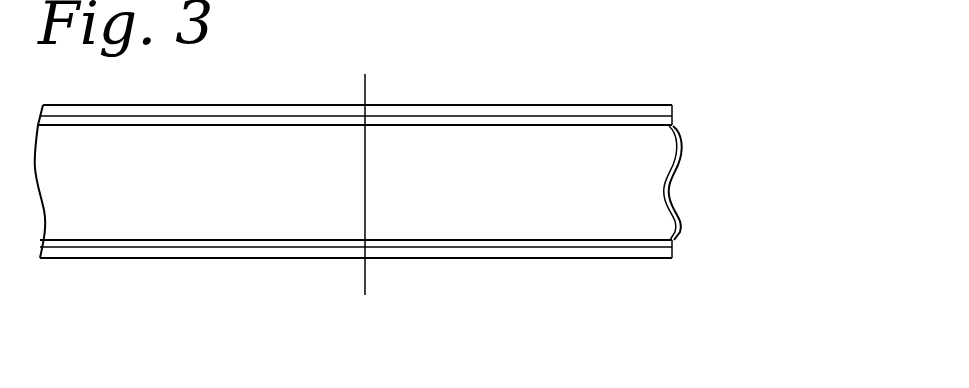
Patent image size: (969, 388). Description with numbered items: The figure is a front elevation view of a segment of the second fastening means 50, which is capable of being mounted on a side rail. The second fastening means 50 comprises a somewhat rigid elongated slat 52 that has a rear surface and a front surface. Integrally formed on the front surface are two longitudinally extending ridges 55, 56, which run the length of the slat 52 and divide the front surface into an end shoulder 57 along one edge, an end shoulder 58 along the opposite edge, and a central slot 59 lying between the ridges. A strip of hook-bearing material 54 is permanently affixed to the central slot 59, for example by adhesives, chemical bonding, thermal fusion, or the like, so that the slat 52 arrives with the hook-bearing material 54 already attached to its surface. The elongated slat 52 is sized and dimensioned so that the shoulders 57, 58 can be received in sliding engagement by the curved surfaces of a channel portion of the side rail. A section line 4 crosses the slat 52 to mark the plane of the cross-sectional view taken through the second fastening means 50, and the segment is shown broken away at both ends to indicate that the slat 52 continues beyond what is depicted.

The section line 4- 4 is at (365, 74).
The second fastening means 50 is at (389, 213).
The elongated slat 52 is at (550, 252).
The strip of hook-bearing material 54 is at (341, 179).
The longitudinally extending ridge 55 is at (674, 116).
The longitudinally extending ridge 56 is at (674, 249).
The end shoulder 57 is at (672, 107).
The end shoulder 58 is at (672, 258).
The central slot 59 is at (676, 183).